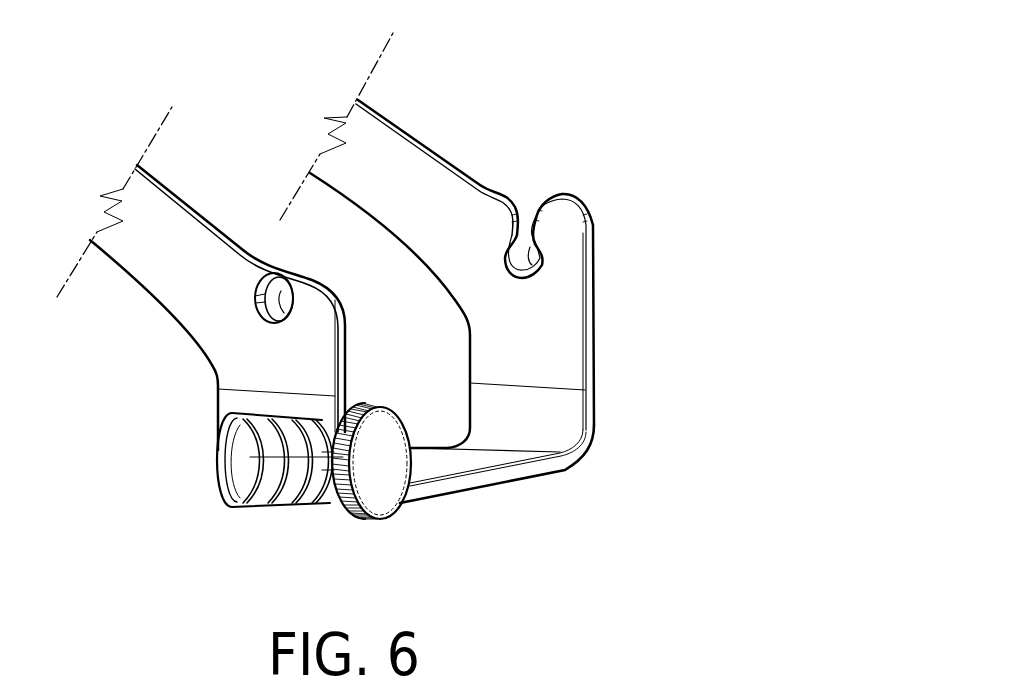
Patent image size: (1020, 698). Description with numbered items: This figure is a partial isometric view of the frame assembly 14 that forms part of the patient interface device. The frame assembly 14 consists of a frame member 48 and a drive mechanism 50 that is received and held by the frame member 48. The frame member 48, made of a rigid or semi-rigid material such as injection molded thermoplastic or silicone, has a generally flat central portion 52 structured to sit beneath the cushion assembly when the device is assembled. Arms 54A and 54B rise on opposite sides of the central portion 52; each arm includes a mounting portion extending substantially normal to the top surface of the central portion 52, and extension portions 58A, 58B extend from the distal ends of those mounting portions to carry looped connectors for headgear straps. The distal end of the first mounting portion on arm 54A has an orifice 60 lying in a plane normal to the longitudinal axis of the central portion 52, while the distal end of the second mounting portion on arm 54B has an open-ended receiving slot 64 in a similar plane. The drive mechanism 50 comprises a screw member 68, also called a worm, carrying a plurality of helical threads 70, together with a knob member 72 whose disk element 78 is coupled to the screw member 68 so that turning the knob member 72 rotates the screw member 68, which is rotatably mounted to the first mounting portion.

The frame assembly 14 is at (592, 89).
The frame member 48 is at (597, 345).
The drive mechanism 50 is at (331, 508).
The central portion 52 is at (450, 464).
The arm 54A is at (207, 383).
The arm 54B is at (464, 328).
The extension portion 58A is at (165, 222).
The extension portion 58B is at (395, 155).
The orifice 60 is at (287, 314).
The receiving slot 64 is at (537, 268).
The screw member 68 is at (250, 504).
The helical threads 70 is at (282, 500).
The knob member 72 is at (372, 522).
The disk element 78 is at (385, 487).